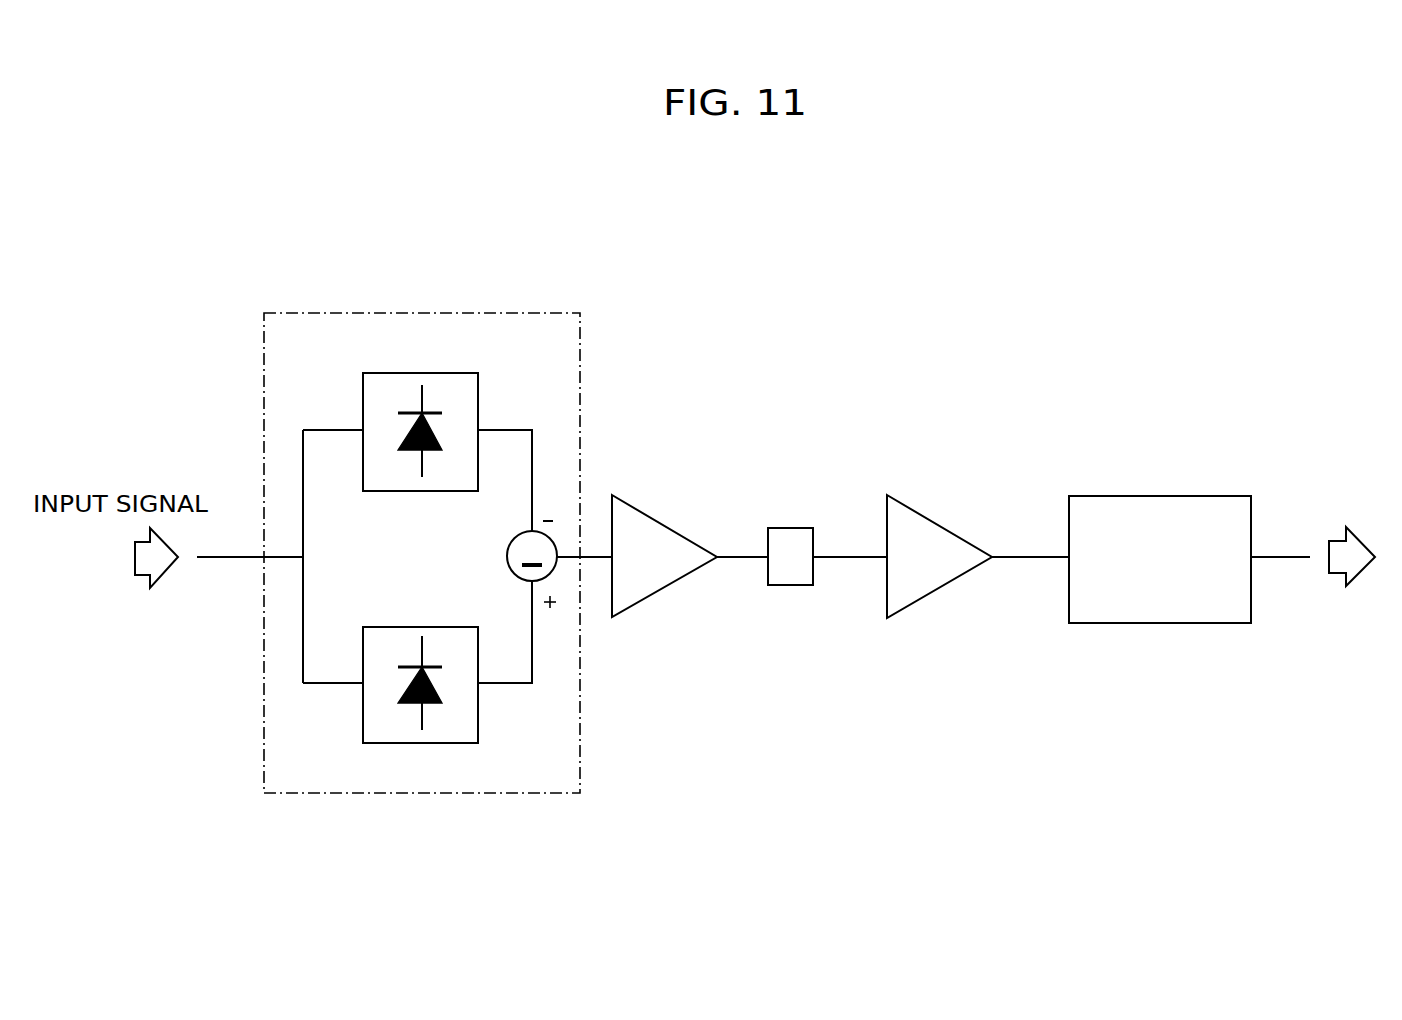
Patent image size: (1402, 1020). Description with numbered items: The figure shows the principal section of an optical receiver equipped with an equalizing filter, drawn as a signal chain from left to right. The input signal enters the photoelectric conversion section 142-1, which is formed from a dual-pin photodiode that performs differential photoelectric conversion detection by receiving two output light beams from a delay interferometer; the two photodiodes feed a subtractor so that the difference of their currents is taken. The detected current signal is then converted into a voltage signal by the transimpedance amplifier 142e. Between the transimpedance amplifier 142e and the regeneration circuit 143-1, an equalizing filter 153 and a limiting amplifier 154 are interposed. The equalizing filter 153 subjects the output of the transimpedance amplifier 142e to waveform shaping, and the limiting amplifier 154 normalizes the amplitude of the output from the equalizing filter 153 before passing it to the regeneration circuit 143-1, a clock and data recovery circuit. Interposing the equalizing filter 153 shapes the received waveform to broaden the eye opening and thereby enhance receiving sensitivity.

The photoelectric conversion section 142-1 is at (422, 313).
The transimpedance amplifier 142e is at (650, 593).
The equalizing filter 153 is at (790, 528).
The limiting amplifier 154 is at (943, 585).
The regeneration circuit 143-1 is at (1160, 623).